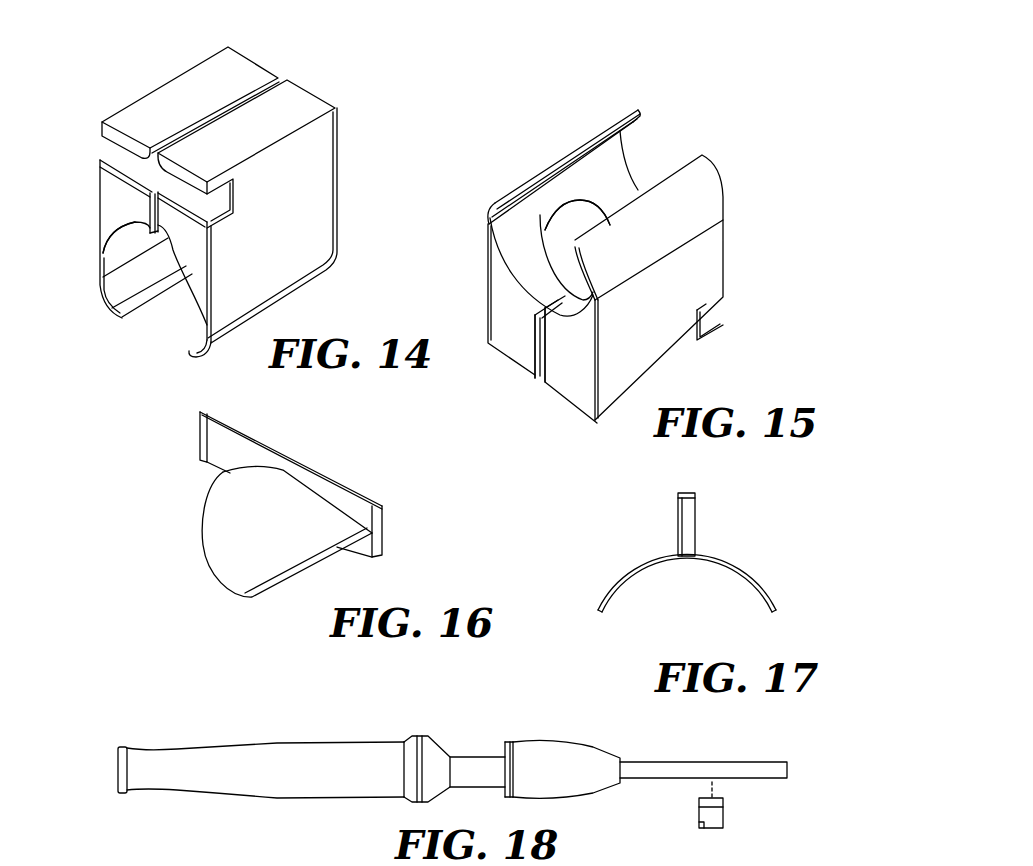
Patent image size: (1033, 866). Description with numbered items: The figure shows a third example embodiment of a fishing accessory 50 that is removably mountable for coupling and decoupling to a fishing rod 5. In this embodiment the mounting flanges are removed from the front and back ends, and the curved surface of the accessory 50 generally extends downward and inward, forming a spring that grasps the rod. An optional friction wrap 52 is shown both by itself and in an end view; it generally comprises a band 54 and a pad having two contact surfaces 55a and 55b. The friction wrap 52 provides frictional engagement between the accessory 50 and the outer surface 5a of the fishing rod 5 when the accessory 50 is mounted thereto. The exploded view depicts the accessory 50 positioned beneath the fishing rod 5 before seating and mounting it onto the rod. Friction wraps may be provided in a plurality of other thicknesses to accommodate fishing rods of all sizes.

In FIG. 14, the accessory 50 is at (80, 75).
In FIG. 15, the accessory 50 is at (814, 152).
In FIG. 18, the accessory 50 is at (737, 833).
In FIG. 16, the friction wrap 52 is at (228, 517).
In FIG. 14, the band 54 is at (110, 284).
In FIG. 15, the band 54 is at (533, 333).
In FIG. 16, the band 54 is at (312, 470).
In FIG. 17, the band 54 is at (687, 513).
In FIG. 15, the contact surface 55a is at (605, 213).
In FIG. 17, the contact surface 55a is at (673, 560).
In FIG. 16, the contact surface 55b is at (223, 540).
In FIG. 17, the contact surface 55b is at (732, 562).
In FIG. 18, the fishing rod 5 is at (243, 732).
In FIG. 18, the outer surface 5a is at (748, 762).